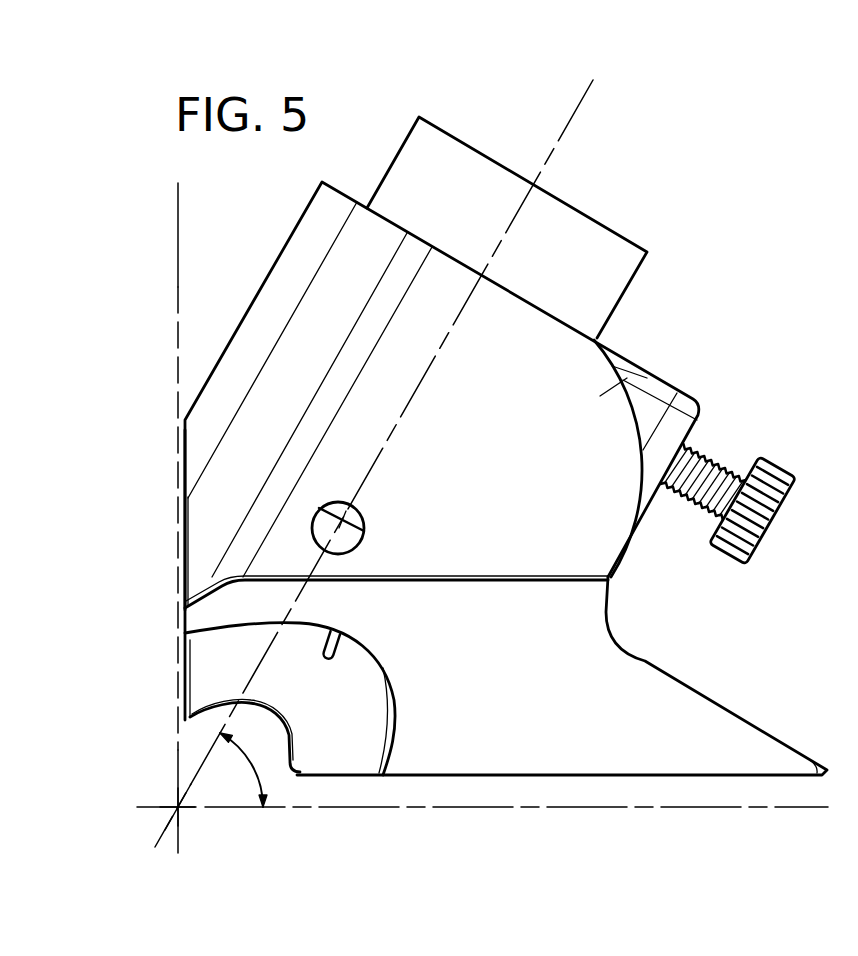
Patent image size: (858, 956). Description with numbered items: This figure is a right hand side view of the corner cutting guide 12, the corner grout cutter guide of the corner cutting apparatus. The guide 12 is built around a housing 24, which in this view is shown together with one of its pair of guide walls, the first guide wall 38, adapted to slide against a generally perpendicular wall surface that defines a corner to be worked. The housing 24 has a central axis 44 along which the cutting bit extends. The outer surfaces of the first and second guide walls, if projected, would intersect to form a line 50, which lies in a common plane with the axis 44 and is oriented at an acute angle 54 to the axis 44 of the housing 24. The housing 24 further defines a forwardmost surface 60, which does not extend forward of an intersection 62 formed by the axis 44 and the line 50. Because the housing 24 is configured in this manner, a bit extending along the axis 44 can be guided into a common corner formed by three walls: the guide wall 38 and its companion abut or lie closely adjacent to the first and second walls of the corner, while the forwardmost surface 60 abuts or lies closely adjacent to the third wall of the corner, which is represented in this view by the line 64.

The corner cutting guide 12 is at (673, 318).
The housing 24 is at (650, 372).
The first guide wall 38 is at (695, 702).
The axis 44 is at (575, 112).
The line 50 is at (703, 810).
The acute angle 54 is at (250, 764).
The forwardmost surface 60 is at (183, 535).
The intersection 62 is at (178, 805).
The line 64 is at (180, 232).